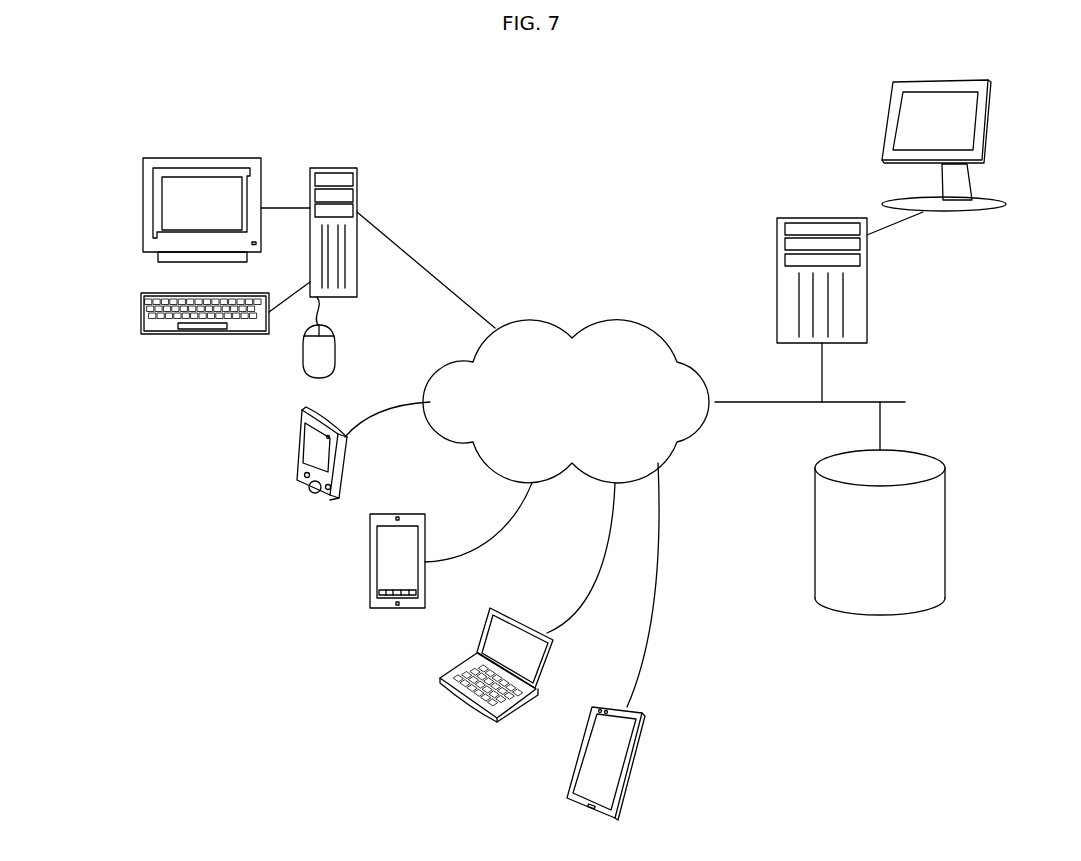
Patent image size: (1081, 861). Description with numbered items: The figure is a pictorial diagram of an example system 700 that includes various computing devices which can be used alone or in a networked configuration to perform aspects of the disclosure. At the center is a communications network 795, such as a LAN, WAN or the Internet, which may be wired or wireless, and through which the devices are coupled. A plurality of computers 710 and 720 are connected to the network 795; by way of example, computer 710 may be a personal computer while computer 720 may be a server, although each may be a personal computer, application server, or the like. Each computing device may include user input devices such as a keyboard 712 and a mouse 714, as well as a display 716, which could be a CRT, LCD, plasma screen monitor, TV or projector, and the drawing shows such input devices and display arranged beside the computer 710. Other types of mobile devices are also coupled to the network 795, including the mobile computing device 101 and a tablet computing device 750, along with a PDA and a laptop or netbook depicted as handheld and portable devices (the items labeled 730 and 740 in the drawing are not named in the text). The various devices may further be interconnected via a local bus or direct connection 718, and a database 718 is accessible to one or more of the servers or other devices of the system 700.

The system 700 is at (1064, 51).
The computer 710 is at (360, 168).
The keyboard 712 is at (142, 203).
The mouse 714 is at (141, 310).
The display 716 is at (335, 345).
The communications network 795 is at (558, 328).
The computer 720 is at (303, 466).
The mobile computing device 101 is at (370, 583).
The laptop computer 730 is at (440, 670).
The tablet device 740 is at (566, 795).
The tablet computing device 750 is at (868, 285).
The database 718 is at (872, 402).